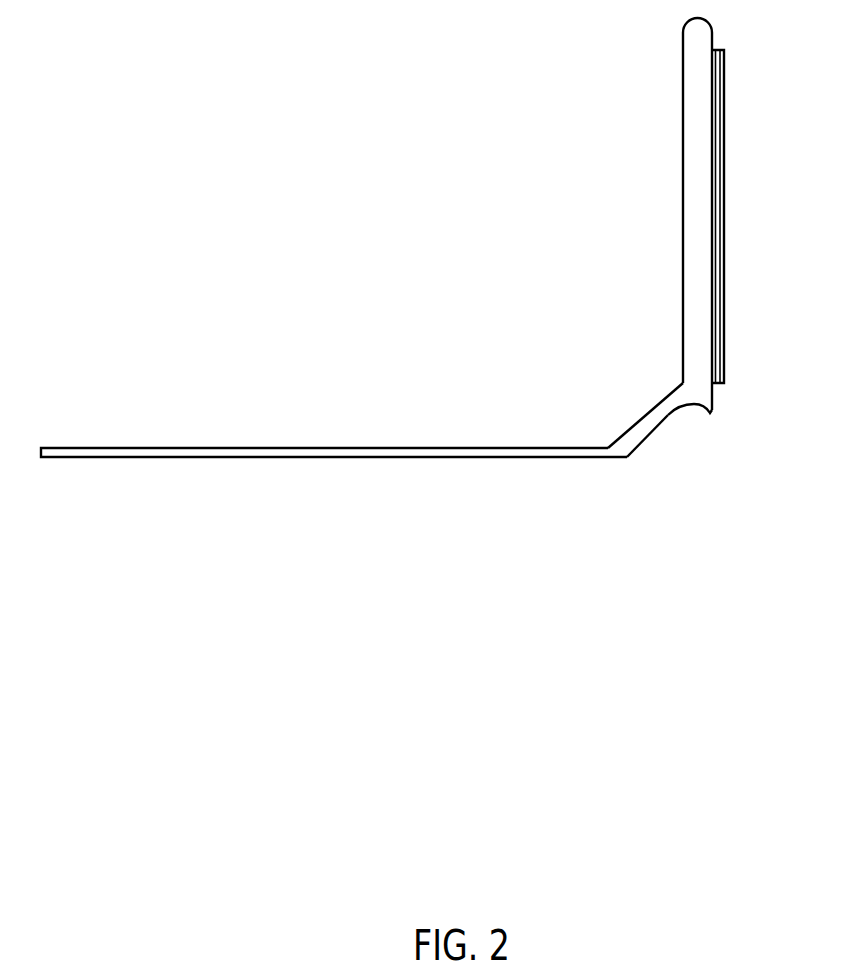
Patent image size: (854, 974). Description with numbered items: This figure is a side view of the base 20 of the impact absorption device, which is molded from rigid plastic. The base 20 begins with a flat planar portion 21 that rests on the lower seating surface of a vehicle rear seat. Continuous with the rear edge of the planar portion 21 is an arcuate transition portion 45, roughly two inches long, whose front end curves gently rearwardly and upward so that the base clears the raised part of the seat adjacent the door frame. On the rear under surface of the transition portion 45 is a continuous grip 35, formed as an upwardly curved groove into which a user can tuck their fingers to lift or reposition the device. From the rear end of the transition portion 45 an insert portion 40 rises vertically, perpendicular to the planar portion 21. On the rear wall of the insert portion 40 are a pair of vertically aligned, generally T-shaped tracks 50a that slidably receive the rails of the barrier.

The base 20 is at (260, 260).
The planar portion 21 is at (212, 447).
The transition portion 45 is at (625, 430).
The grip 35 is at (697, 408).
The insert portion 40 is at (682, 115).
The tracks 50a is at (723, 128).